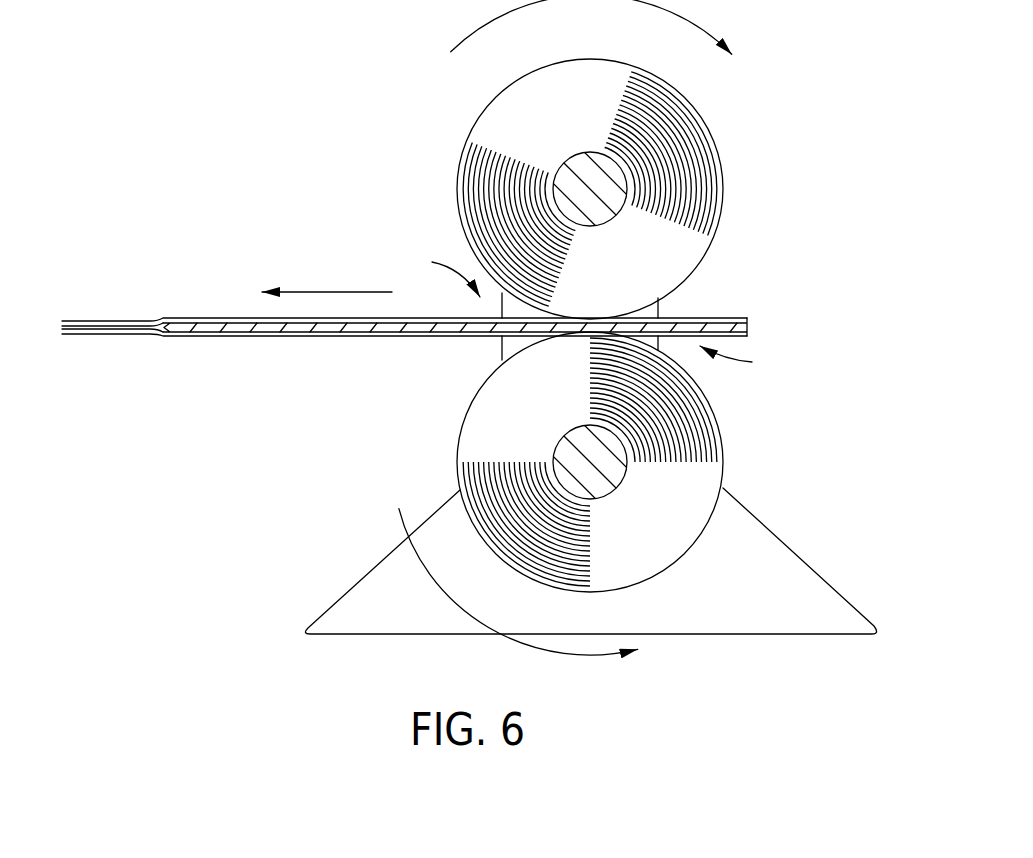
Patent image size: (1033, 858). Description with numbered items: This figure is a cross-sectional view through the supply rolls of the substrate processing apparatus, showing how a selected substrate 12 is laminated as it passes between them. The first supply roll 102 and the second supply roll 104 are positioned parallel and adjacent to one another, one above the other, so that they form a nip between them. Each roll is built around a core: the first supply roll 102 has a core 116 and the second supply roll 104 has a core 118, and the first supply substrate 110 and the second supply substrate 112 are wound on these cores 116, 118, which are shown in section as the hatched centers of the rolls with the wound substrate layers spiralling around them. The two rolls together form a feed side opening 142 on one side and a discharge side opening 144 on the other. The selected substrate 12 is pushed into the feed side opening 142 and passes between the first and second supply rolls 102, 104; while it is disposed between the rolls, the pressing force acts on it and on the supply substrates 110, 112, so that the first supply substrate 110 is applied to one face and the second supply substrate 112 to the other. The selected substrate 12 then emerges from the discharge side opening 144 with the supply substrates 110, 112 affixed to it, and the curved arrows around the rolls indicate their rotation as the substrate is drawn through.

The selected substrate 12 is at (747, 322).
The first supply roll 102 is at (692, 107).
The second supply roll 104 is at (725, 450).
The first supply substrate 110 is at (197, 317).
The second supply substrate 112 is at (208, 340).
The core 116 is at (562, 173).
The core 118 is at (622, 482).
The feed side opening 142 is at (746, 365).
The discharge side opening 144 is at (433, 266).